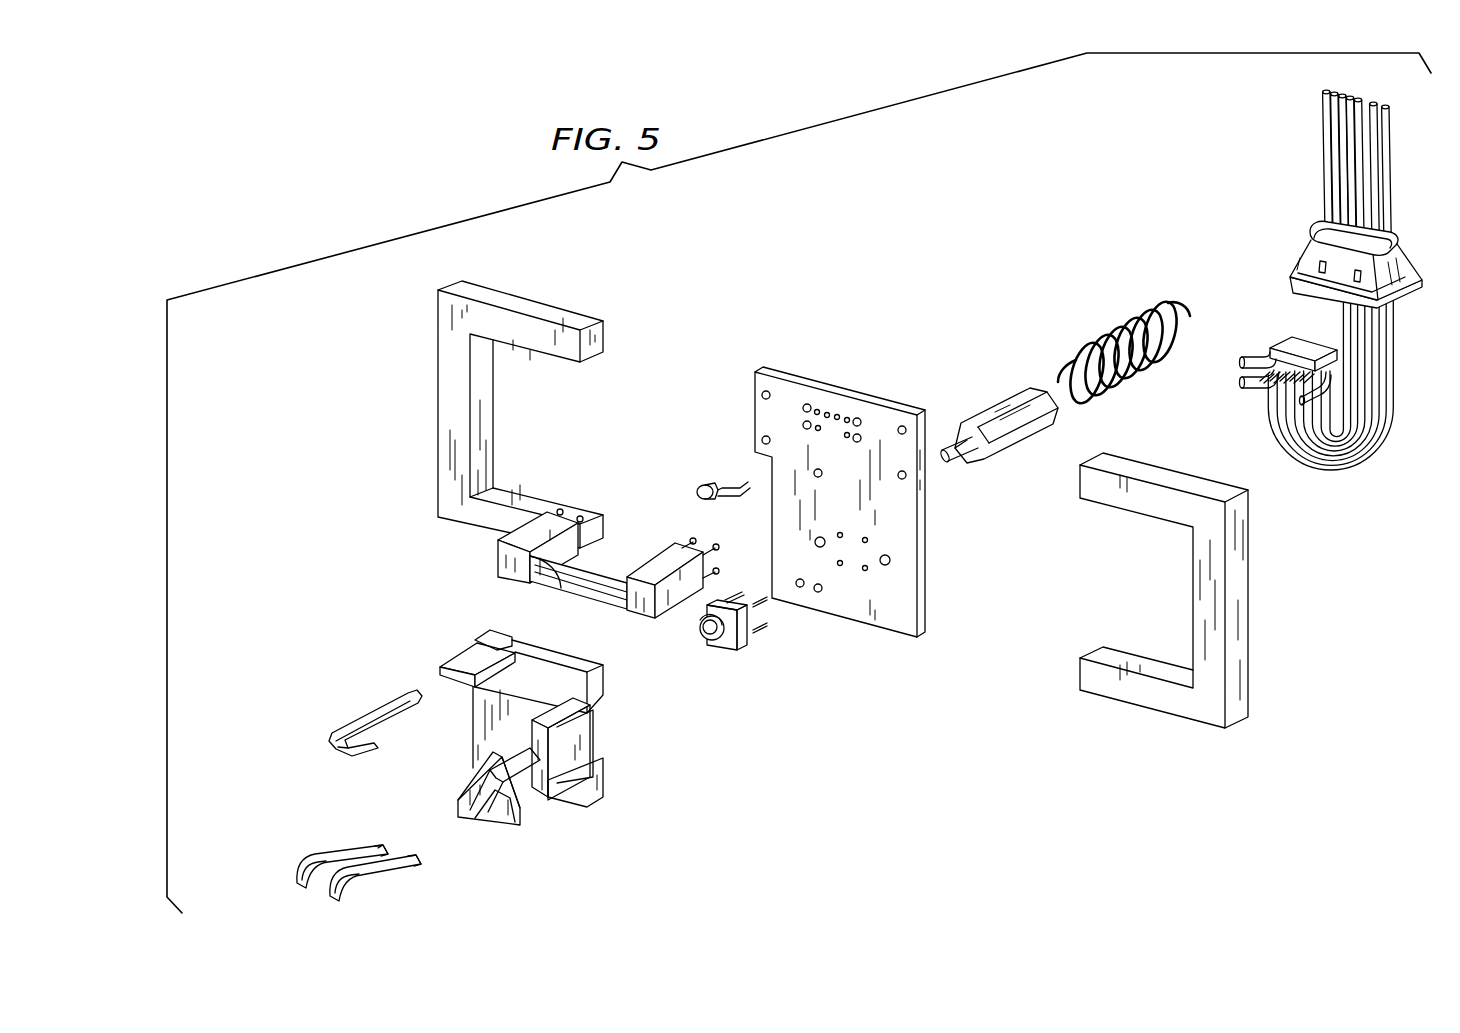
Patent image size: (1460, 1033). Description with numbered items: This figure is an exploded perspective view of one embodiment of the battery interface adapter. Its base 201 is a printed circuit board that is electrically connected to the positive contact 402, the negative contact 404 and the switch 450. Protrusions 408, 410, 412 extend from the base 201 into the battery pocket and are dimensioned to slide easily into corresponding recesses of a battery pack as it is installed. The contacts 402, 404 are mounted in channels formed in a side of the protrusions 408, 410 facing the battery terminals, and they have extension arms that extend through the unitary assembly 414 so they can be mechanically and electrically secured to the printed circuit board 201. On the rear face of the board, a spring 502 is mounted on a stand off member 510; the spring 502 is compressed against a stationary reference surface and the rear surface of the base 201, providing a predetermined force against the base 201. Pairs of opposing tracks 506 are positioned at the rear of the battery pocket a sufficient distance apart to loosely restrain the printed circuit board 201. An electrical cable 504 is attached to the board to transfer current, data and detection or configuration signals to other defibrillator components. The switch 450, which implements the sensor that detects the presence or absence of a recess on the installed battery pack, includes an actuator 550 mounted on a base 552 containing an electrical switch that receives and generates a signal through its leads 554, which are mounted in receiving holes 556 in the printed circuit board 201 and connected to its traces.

The base 201 is at (850, 390).
The positive contact 402 is at (350, 730).
The negative contact 404 is at (308, 870).
The protrusion 408 is at (510, 820).
The protrusion 410 is at (458, 662).
The protrusion 412 is at (573, 778).
The unitary assembly 414 is at (554, 752).
The switch 450 is at (762, 630).
The spring 502 is at (1108, 333).
The electrical cable 504 is at (1362, 463).
The opposing tracks 506 is at (568, 317).
The stand off member 510 is at (1000, 393).
The actuator 550 is at (712, 647).
The base 552 is at (723, 598).
The leads 554 is at (760, 605).
The receiving holes 556 is at (865, 568).